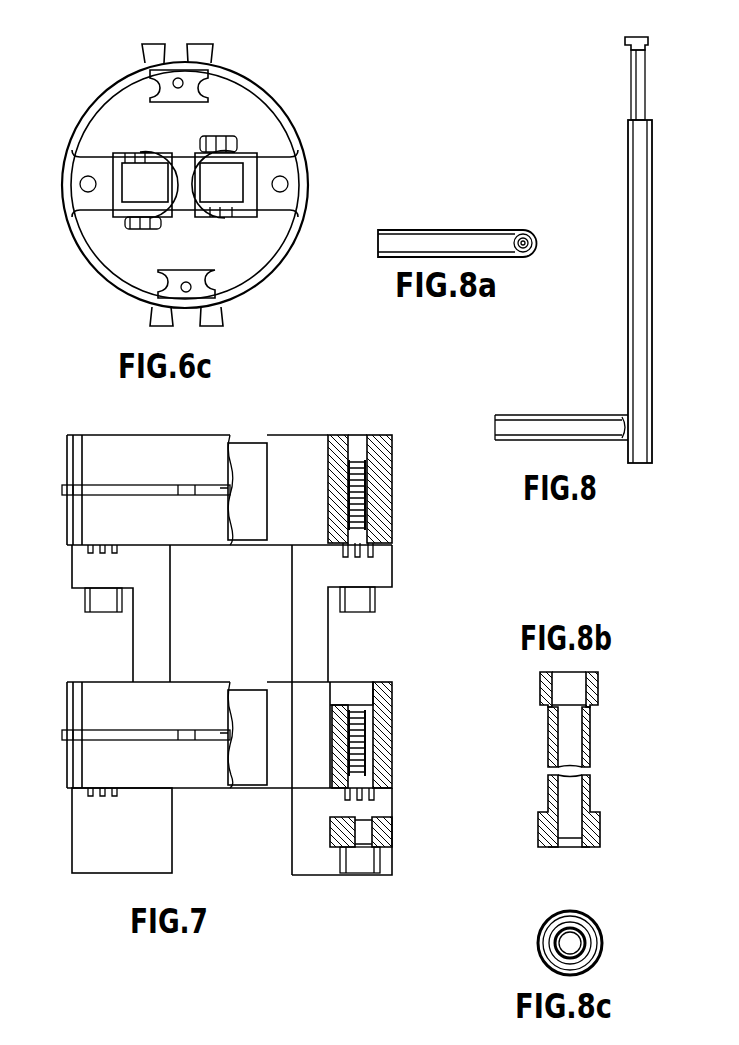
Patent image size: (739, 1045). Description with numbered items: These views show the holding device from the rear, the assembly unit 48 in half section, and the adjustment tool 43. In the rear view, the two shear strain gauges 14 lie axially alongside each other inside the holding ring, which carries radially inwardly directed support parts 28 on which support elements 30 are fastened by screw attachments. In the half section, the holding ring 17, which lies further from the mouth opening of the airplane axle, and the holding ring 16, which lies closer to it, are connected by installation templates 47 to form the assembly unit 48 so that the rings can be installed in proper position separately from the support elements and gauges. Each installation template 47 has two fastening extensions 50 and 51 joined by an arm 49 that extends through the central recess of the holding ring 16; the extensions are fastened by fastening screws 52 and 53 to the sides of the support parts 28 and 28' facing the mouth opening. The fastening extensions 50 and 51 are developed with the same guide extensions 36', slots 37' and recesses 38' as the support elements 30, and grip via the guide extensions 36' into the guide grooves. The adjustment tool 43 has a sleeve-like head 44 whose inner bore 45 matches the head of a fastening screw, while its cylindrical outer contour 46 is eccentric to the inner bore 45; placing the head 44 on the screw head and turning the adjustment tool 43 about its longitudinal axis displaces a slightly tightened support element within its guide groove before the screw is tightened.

In FIG. 6C, the shear strain gauge 14 is at (130, 168).
In FIG. 6C, the support part 28 is at (186, 141).
In FIG. 7, the support part 28 is at (387, 489).
In FIG. 6C, the support element 30 is at (118, 205).
In FIG. 7, the assembly unit 48 is at (243, 657).
In FIG. 7, the holding ring 17 is at (95, 530).
In FIG. 7, the holding ring 16 is at (90, 758).
In FIG. 7, the slot 37' is at (394, 510).
In FIG. 7, the guide extension 36' is at (396, 765).
In FIG. 7, the recess 38' is at (388, 839).
In FIG. 7, the support part 28' is at (391, 735).
In FIG. 7, the fastening extension 51 is at (350, 578).
In FIG. 7, the fastening screw 53 is at (360, 602).
In FIG. 7, the installation template 47 is at (126, 620).
In FIG. 7, the arm 49 is at (145, 635).
In FIG. 7, the fastening extension 50 is at (312, 845).
In FIG. 7, the fastening screw 52 is at (353, 860).
In FIG. 8A, the adjustment tool 43 is at (458, 222).
In FIG. 8, the adjustment tool 43 is at (620, 178).
In FIG. 8, the sleeve-like head 44 is at (630, 64).
In FIG. 8B, the sleeve-like head 44 is at (594, 753).
In FIG. 8B, the inner bore 45 is at (578, 687).
In FIG. 8B, the cylindrical outer contour 46 is at (540, 690).
In FIG. 8C, the cylindrical outer contour 46 is at (540, 950).